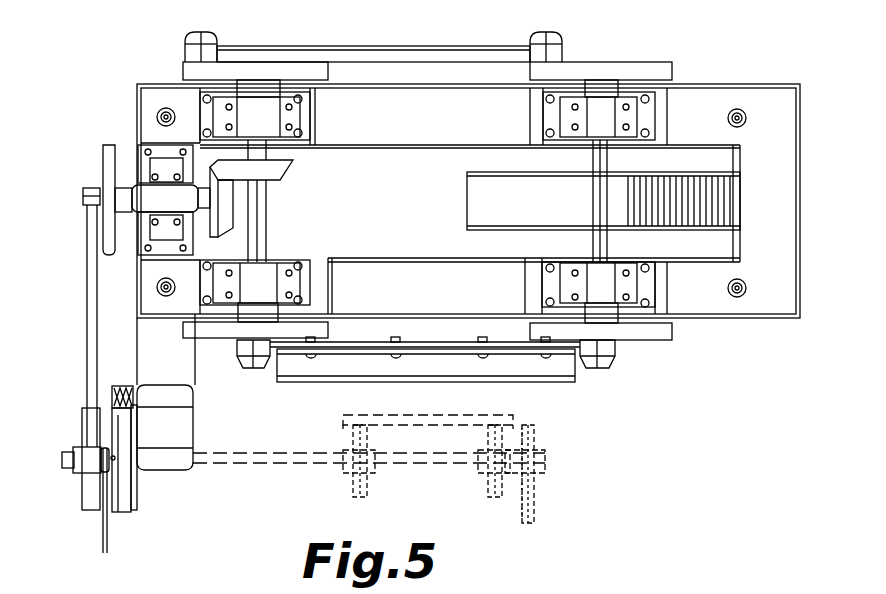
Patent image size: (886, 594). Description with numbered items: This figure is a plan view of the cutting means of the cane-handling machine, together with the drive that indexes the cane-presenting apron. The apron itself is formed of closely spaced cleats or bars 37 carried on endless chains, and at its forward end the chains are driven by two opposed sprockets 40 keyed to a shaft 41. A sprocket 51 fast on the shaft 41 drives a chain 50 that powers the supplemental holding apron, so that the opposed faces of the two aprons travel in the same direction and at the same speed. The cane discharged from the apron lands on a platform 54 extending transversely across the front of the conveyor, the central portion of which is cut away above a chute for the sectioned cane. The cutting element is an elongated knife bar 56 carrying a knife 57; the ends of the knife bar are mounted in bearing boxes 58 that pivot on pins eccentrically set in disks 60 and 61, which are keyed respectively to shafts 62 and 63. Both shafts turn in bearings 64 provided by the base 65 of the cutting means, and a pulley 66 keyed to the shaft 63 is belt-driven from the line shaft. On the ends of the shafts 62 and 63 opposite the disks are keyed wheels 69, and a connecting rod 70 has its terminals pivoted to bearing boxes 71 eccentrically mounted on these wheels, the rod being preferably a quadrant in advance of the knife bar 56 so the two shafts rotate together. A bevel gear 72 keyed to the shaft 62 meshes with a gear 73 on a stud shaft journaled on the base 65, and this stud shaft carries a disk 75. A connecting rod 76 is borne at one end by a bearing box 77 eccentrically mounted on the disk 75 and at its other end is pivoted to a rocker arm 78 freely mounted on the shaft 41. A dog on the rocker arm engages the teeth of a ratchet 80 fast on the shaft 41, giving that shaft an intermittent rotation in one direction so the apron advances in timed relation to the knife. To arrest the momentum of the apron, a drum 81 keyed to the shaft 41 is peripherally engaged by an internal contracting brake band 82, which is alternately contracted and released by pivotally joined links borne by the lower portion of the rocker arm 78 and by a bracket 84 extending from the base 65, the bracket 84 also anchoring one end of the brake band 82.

The cleats or bars 37 is at (515, 415).
The sprockets 40 is at (488, 487).
The shaft 41 is at (278, 468).
The chain 50 is at (535, 513).
The sprocket 51 is at (535, 442).
The platform 54 is at (428, 381).
The knife bar 56 is at (360, 348).
The knife 57 is at (338, 360).
The bearing boxes 58 is at (237, 350).
The disk 60 is at (197, 328).
The disk 61 is at (662, 335).
The shaft 62 is at (268, 223).
The shaft 63 is at (608, 246).
The bearings 64 is at (600, 118).
The base 65 is at (153, 155).
The pulley 66 is at (603, 201).
The wheels 69 is at (290, 50).
The connecting rod 70 is at (335, 50).
The bearing boxes 71 is at (188, 36).
The bevel gear 72 is at (275, 173).
The gear 73 is at (225, 203).
The disk 75 is at (108, 152).
The connecting rod 76 is at (87, 293).
The bearing box 77 is at (80, 190).
The rocker arm 78 is at (105, 473).
The ratchet 80 is at (88, 490).
The drum 81 is at (137, 497).
The brake band 82 is at (127, 512).
The bracket 84 is at (193, 427).